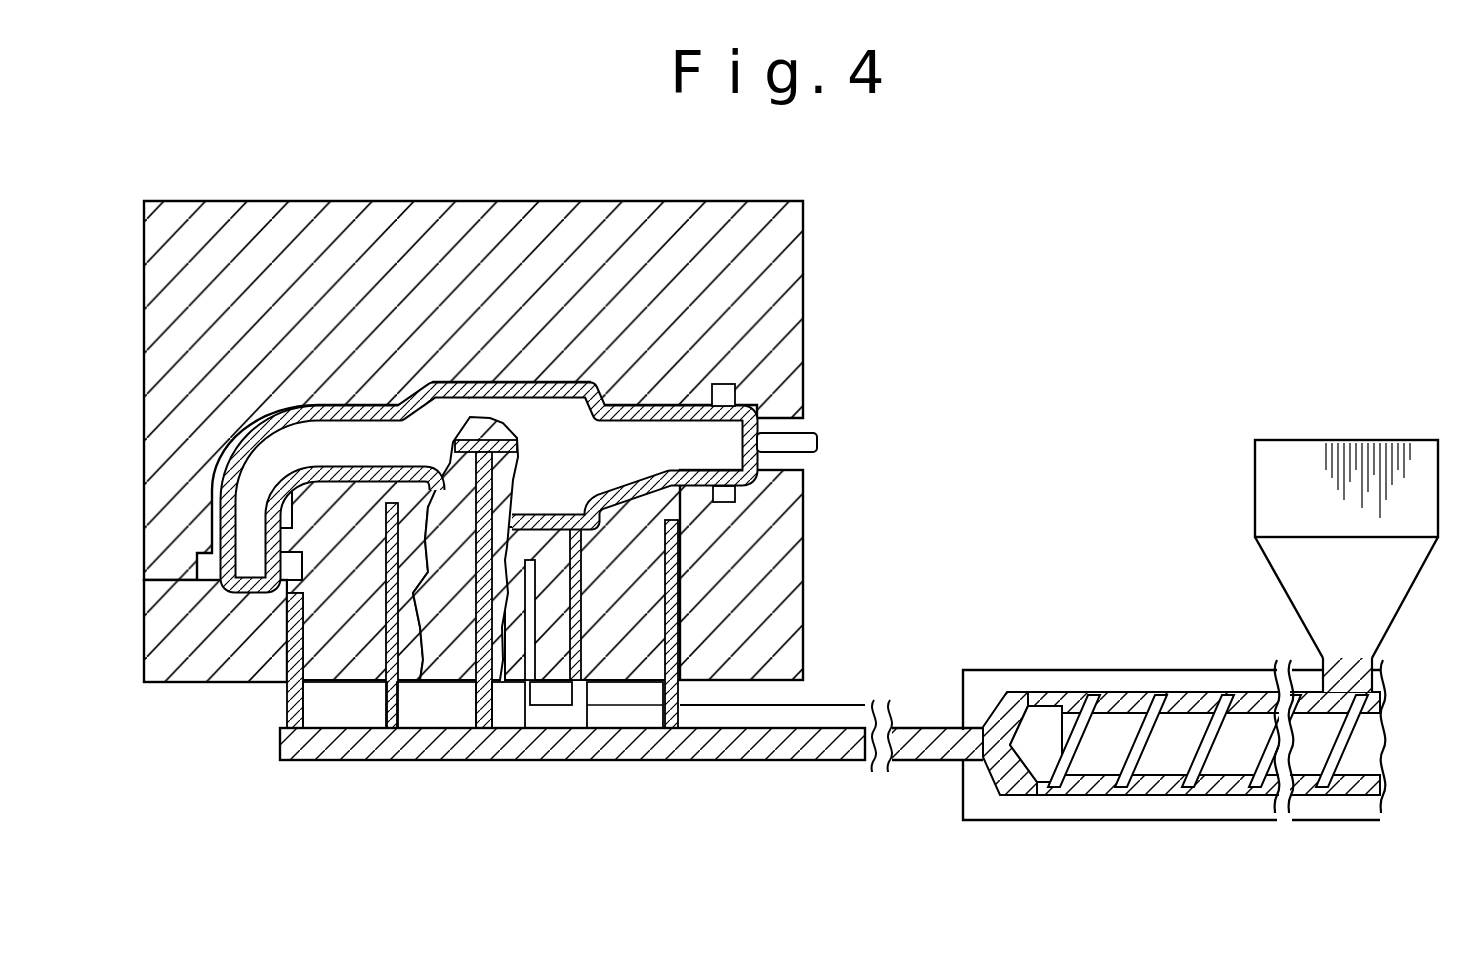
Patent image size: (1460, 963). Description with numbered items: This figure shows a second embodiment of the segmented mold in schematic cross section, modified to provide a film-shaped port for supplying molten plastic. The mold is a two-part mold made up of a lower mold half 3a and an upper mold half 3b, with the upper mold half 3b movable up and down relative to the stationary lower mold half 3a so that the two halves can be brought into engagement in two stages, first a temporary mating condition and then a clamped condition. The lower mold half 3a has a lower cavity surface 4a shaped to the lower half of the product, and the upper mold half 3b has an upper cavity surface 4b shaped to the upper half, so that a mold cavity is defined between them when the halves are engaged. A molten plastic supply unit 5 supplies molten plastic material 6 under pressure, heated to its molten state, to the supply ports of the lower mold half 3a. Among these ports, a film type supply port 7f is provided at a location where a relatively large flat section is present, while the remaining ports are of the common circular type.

The lower mold half 3a is at (163, 676).
The upper mold half 3b is at (292, 216).
The lower cavity surface 4a is at (359, 484).
The upper cavity surface 4b is at (552, 388).
The molten plastic supply unit 5 is at (1146, 806).
The molten plastic material 6 is at (773, 762).
The film type supply port 7f is at (516, 425).